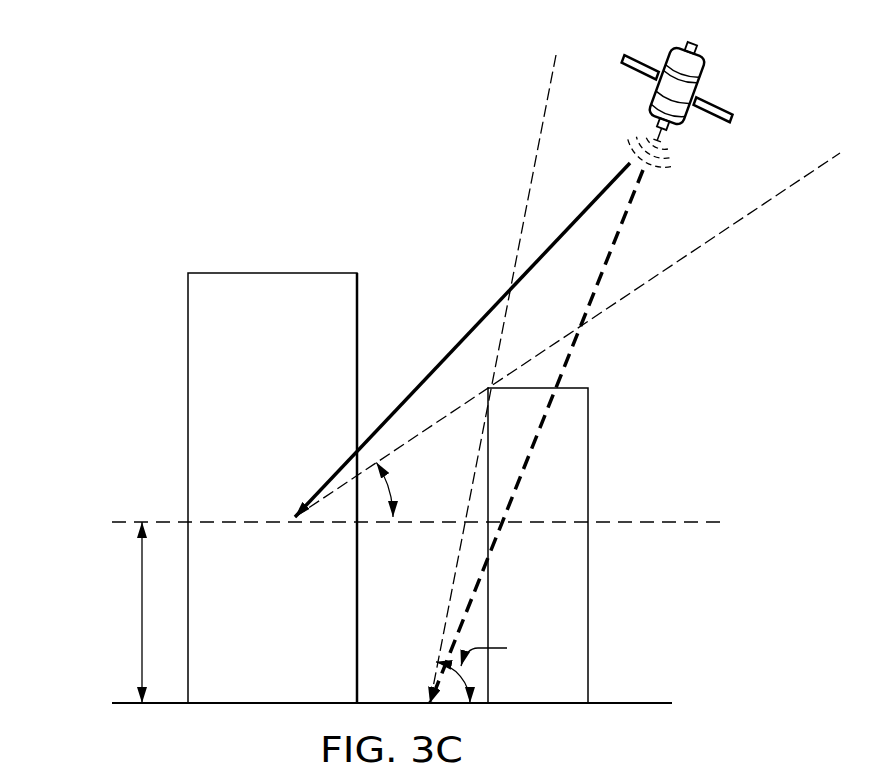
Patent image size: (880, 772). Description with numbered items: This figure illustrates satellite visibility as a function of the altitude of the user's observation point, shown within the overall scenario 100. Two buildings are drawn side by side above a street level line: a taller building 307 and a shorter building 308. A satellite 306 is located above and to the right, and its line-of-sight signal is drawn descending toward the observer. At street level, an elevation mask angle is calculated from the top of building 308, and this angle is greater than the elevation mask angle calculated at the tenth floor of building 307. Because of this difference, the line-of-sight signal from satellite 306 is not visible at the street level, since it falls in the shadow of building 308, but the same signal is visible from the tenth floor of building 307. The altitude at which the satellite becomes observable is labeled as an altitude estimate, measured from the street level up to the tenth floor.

The urban environment / system 100 is at (157, 79).
The satellite 306 is at (723, 92).
The building 307 is at (272, 272).
The building 308 is at (588, 447).